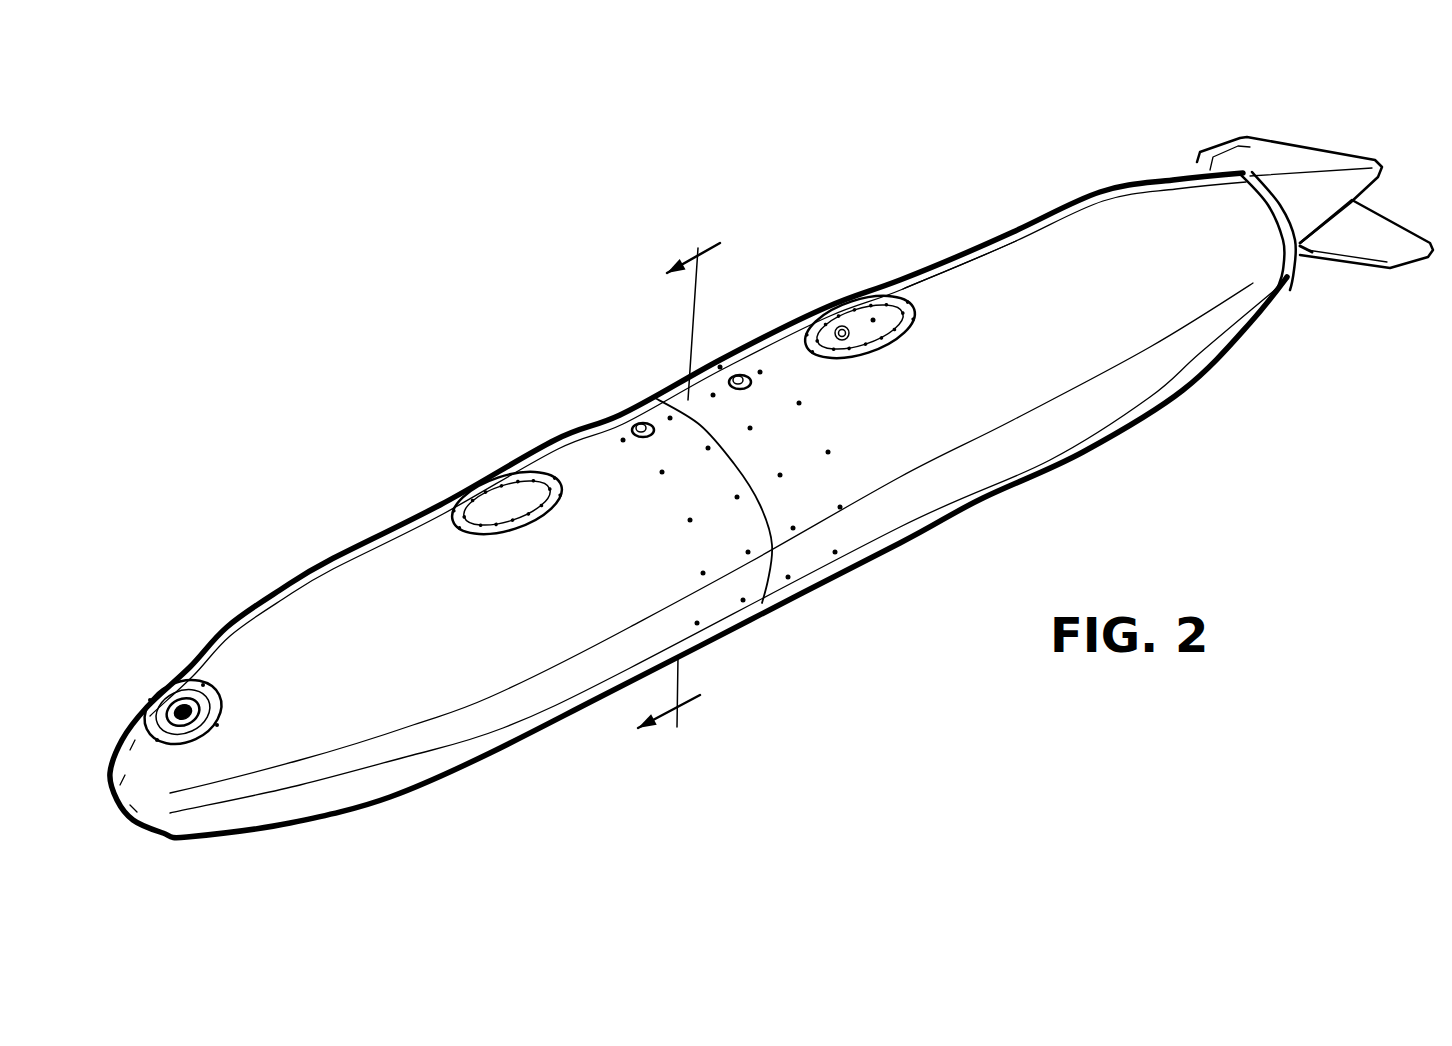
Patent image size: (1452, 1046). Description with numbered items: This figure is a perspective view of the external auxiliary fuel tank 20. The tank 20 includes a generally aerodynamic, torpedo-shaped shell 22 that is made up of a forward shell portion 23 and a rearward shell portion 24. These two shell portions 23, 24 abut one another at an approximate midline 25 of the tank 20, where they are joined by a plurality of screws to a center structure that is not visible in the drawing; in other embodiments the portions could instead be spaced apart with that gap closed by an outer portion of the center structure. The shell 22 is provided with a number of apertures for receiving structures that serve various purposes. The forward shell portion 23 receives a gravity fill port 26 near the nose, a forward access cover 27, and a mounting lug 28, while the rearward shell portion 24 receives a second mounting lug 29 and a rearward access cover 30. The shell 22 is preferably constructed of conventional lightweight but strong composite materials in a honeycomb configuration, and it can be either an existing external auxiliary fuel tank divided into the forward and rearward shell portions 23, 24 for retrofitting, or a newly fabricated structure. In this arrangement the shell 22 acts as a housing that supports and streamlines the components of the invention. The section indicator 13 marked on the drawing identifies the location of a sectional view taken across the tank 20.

The external auxiliary fuel tank 20 is at (777, 757).
The shell 22 is at (555, 438).
The forward shell portion 23 is at (318, 597).
The rearward shell portion 24 is at (1065, 230).
The midline 25 is at (765, 597).
The gravity fill port 26 is at (162, 687).
The forward access cover 27 is at (492, 510).
The mounting lug 28 is at (641, 425).
The mounting lug 29 is at (748, 363).
The rearward access cover 30 is at (855, 318).
The section line for FIG. 13 is at (679, 487).